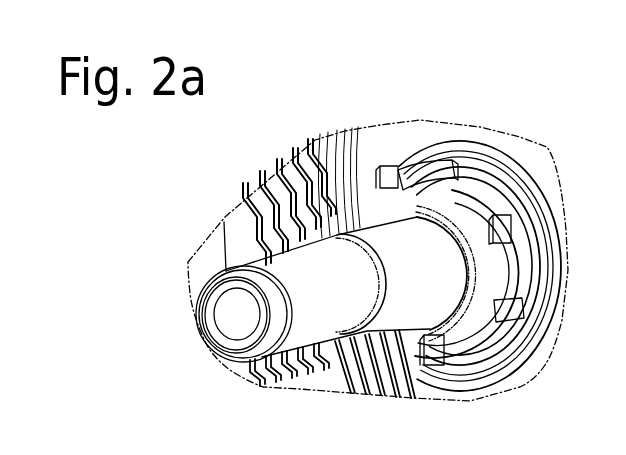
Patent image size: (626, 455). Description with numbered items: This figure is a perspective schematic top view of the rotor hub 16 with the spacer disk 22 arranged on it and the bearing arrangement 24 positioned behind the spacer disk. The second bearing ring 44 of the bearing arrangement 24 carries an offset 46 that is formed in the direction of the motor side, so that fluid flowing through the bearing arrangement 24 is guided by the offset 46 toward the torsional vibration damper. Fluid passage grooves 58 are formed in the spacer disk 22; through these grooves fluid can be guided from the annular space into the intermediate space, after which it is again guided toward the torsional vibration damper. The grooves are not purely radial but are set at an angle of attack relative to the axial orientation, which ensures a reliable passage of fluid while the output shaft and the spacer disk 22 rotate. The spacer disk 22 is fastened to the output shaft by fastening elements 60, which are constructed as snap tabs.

The rotor hub 16 is at (227, 268).
The spacer disk 22 is at (357, 207).
The bearing arrangement 24 is at (542, 334).
The second bearing ring 44 is at (441, 146).
The offset 46 is at (472, 150).
The fluid passage grooves 58 is at (485, 153).
The fastening elements 60 is at (385, 178).